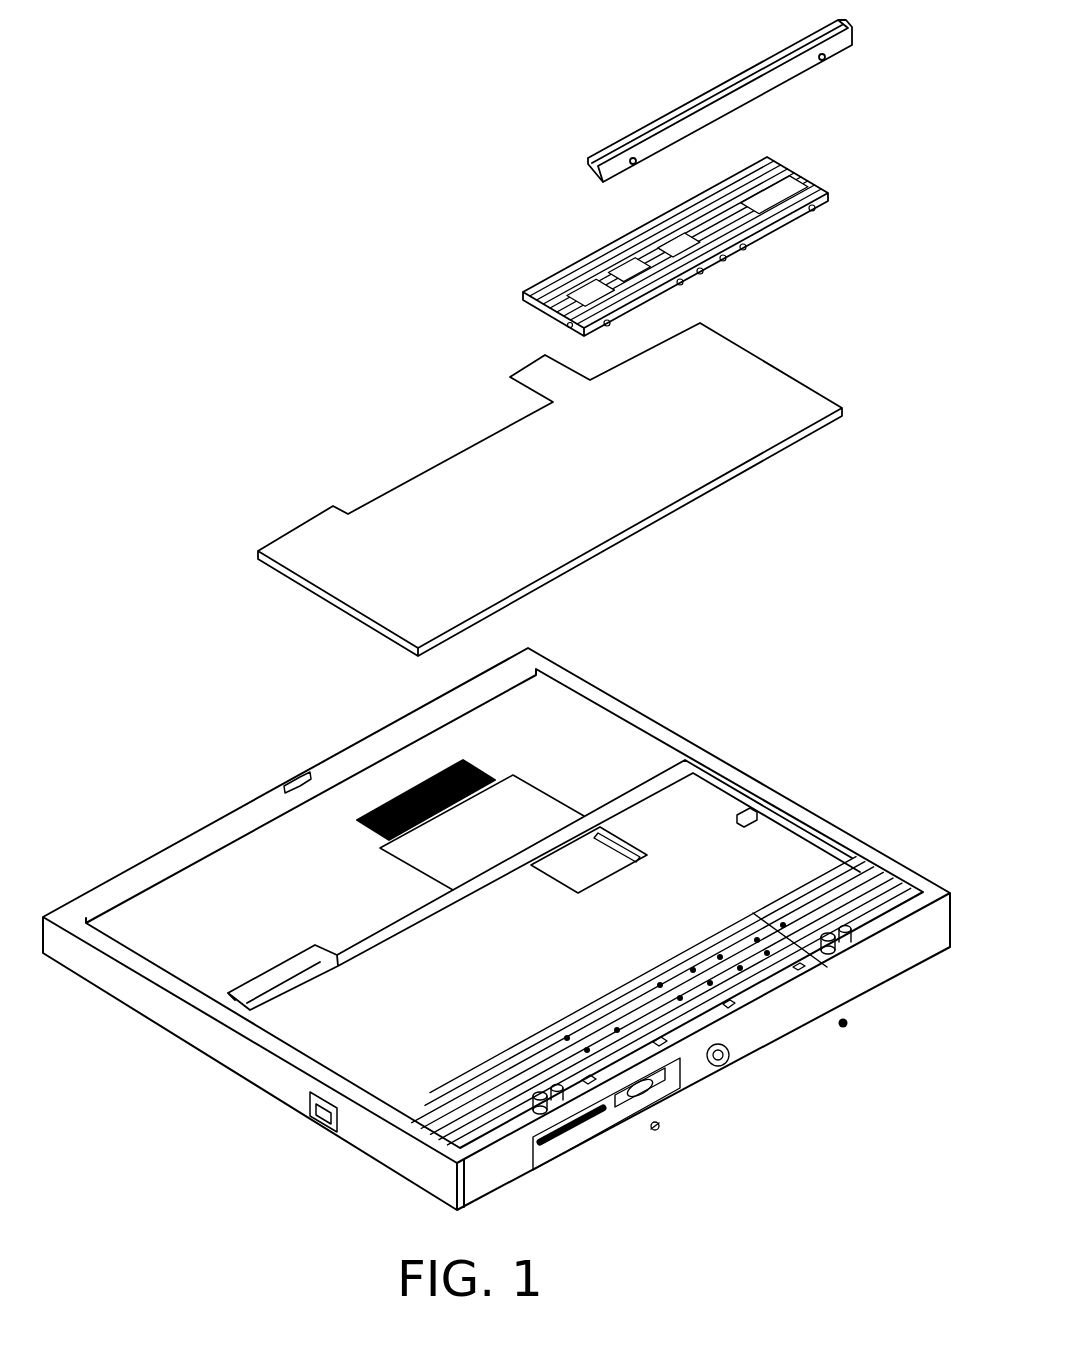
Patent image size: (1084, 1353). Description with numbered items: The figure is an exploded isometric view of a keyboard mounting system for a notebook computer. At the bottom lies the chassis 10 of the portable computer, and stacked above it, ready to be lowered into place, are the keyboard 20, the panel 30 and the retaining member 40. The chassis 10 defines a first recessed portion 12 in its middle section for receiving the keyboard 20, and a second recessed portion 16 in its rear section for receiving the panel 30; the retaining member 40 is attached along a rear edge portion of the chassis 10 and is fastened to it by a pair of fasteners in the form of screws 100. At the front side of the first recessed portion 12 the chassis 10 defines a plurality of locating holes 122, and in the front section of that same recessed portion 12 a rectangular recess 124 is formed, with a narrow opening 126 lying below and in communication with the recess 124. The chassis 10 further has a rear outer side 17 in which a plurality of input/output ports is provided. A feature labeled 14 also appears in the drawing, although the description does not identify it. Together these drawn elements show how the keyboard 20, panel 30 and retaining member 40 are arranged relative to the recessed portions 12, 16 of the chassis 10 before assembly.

The chassis 10 is at (305, 740).
The first recessed portion 12 is at (390, 1073).
The partition rib 14 is at (700, 957).
The second recessed portion 16 is at (568, 1065).
The rear outer side 17 is at (895, 955).
The keyboard 20 is at (466, 416).
The panel 30 is at (595, 236).
The retaining member 40 is at (638, 113).
The screws 100 is at (655, 1131).
The locating holes 122 is at (330, 960).
The rectangular recess 124 is at (600, 867).
The narrow opening 126 is at (587, 840).